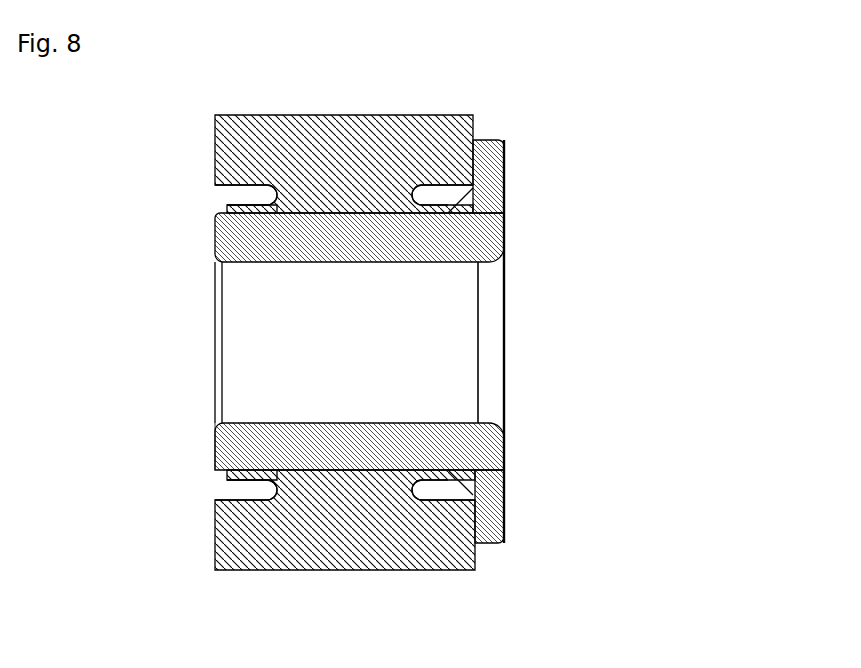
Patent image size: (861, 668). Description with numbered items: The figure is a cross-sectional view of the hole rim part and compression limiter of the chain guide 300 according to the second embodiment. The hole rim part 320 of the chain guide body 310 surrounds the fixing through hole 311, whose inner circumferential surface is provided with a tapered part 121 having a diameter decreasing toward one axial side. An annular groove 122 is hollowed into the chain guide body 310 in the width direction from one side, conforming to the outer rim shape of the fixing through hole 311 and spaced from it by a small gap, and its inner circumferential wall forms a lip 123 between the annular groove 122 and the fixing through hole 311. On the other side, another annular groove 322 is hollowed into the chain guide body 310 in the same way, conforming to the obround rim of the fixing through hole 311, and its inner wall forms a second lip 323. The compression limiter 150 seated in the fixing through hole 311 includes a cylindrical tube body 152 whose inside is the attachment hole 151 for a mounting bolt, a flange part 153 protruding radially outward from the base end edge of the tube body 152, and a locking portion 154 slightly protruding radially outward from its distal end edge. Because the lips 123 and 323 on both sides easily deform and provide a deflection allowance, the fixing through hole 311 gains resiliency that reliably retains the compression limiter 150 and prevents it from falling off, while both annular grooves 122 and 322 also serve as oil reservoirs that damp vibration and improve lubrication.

The chain guide 300 is at (668, 115).
The chain guide body 310 is at (510, 130).
The hole rim part 320 is at (212, 118).
The tapered part 121 is at (255, 221).
The annular groove 122 is at (215, 193).
The lip 123 is at (215, 208).
The annular groove 322 is at (447, 193).
The lip 323 is at (503, 215).
The compression limiter 150 is at (506, 380).
The attachment hole 151 is at (440, 315).
The tube body 152 is at (312, 456).
The flange part 153 is at (506, 512).
The locking portion 154 is at (215, 476).
The fixing through hole 311 is at (407, 455).